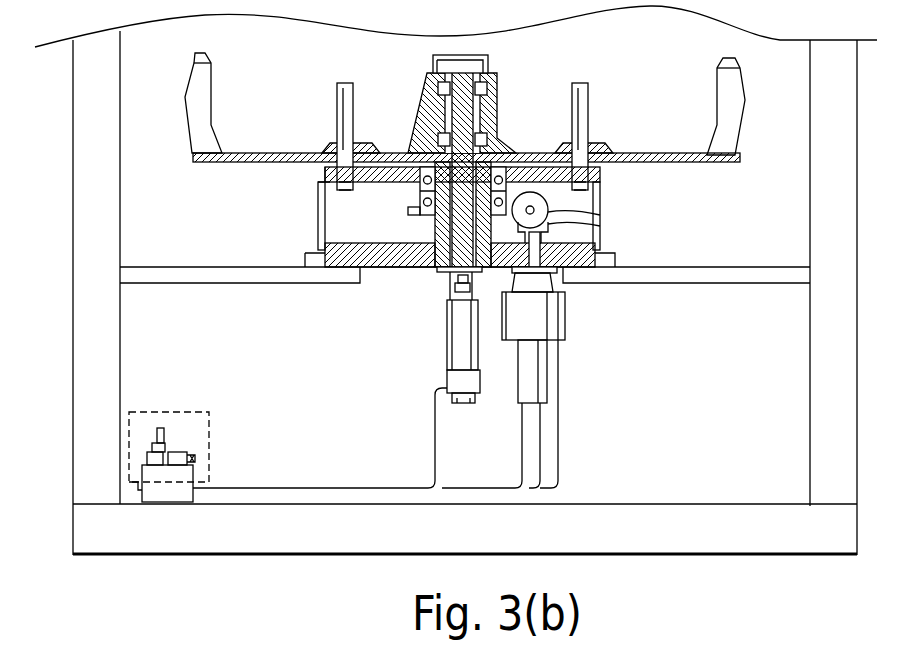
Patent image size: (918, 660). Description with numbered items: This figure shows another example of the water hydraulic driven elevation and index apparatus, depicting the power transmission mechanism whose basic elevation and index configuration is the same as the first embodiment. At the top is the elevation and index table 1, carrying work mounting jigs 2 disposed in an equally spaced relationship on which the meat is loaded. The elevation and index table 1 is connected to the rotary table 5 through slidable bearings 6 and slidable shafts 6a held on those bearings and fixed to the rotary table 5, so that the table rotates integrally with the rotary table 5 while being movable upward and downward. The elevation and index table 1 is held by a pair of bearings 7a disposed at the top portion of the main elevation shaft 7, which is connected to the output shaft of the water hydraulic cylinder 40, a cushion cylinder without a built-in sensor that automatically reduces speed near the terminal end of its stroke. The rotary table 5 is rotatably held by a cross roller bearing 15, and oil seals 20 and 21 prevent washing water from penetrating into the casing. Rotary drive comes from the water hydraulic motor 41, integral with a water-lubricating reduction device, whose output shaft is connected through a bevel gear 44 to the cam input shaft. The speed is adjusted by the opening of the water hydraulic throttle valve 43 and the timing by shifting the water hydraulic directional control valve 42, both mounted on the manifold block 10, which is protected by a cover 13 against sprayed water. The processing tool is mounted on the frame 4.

The elevation and index table 1 is at (248, 153).
The work mounting jigs 2 is at (205, 72).
The frame 4 is at (828, 315).
The rotary table 5 is at (307, 170).
The slidable bearings 6 is at (357, 147).
The slidable shafts 6a is at (343, 107).
The main elevation shaft 7 is at (477, 60).
The bearings 7a is at (492, 140).
The manifold block 10 is at (185, 478).
The cover 13 is at (133, 412).
The cross roller bearing 15 is at (422, 222).
The oil seal 20 is at (603, 173).
The oil seal 21 is at (512, 162).
The water hydraulic cylinder 40 is at (455, 343).
The water hydraulic motor 41 is at (560, 318).
The water hydraulic directional control valve 42 is at (158, 430).
The water hydraulic throttle valve 43 is at (178, 452).
The bevel gear 44 is at (613, 222).